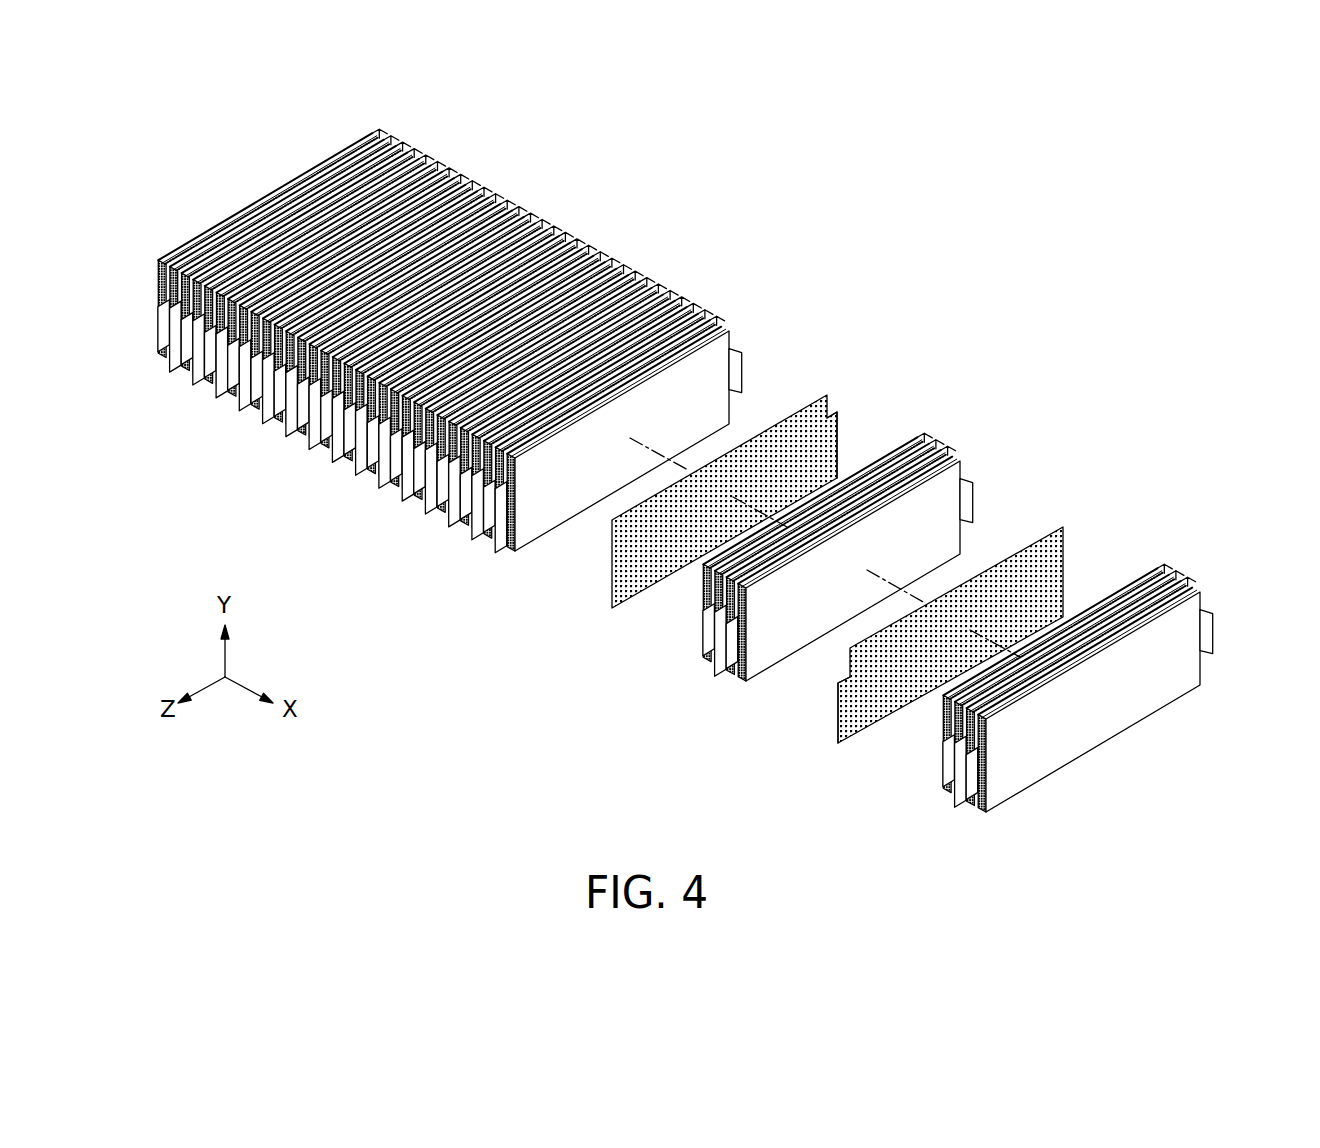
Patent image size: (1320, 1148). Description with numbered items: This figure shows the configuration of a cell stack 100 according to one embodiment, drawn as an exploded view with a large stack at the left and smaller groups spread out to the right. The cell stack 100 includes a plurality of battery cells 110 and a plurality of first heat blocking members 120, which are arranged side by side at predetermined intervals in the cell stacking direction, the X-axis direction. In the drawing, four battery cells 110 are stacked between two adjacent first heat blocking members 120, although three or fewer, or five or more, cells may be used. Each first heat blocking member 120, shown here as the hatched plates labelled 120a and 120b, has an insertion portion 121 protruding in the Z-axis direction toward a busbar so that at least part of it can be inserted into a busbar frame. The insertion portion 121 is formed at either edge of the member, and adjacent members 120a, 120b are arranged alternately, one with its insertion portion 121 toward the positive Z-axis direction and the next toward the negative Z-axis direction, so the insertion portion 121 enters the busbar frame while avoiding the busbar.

The cell stack 100 is at (240, 113).
The battery cell 110 is at (697, 378).
The first heat blocking member 120 is at (982, 193).
The first pad 120a is at (465, 564).
The second pad 120b is at (652, 612).
The insertion portion 121 is at (833, 430).